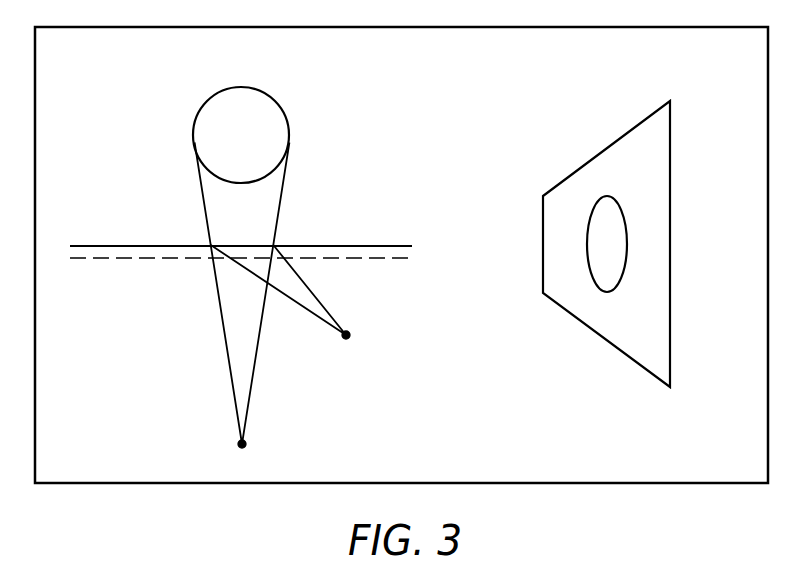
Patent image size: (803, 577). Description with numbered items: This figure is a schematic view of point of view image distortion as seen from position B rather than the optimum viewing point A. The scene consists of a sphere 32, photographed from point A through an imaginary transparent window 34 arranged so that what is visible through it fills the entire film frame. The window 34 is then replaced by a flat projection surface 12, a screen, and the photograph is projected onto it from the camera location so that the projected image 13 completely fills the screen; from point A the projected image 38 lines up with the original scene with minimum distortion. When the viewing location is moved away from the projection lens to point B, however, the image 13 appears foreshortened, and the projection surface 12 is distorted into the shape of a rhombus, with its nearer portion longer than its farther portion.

The projection surface 12 is at (393, 243).
The projected image 13 is at (630, 167).
The sphere 32 is at (255, 113).
The window 34 is at (367, 258).
The projected image 38 is at (198, 202).